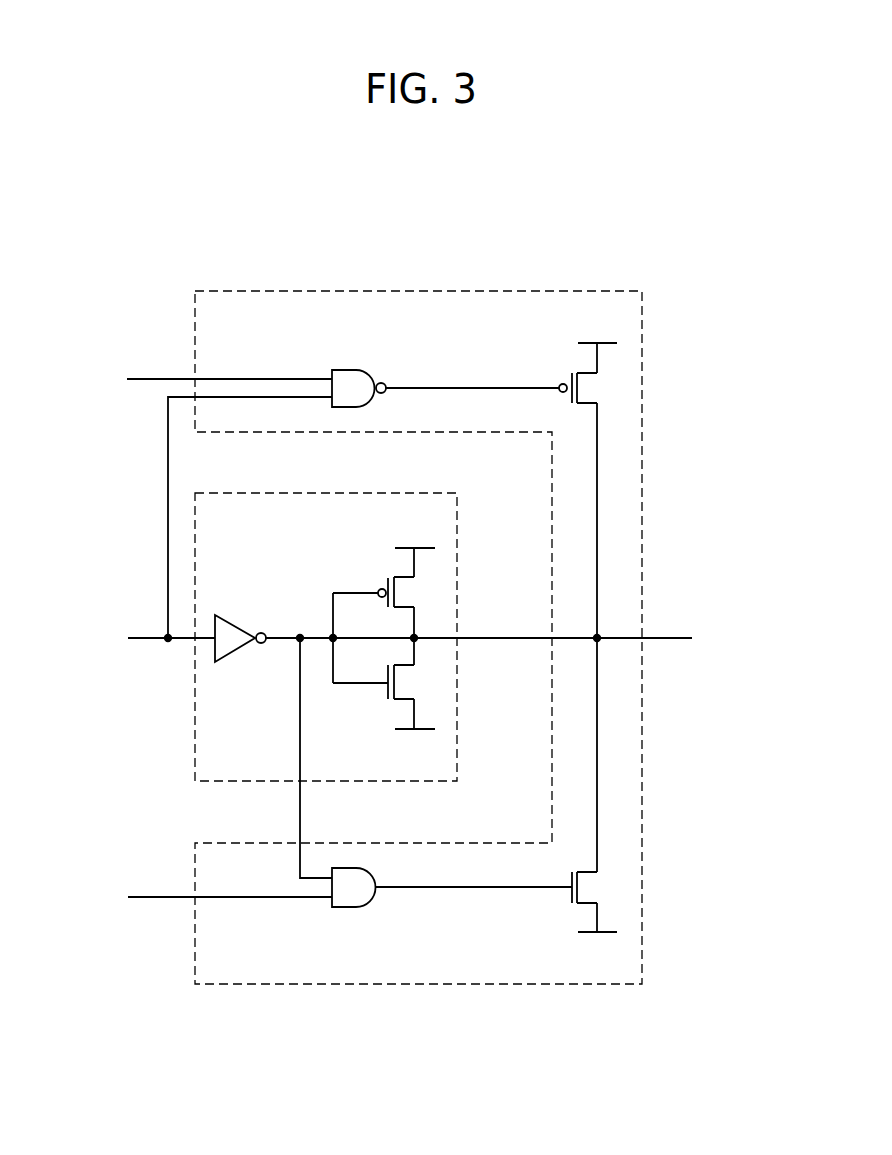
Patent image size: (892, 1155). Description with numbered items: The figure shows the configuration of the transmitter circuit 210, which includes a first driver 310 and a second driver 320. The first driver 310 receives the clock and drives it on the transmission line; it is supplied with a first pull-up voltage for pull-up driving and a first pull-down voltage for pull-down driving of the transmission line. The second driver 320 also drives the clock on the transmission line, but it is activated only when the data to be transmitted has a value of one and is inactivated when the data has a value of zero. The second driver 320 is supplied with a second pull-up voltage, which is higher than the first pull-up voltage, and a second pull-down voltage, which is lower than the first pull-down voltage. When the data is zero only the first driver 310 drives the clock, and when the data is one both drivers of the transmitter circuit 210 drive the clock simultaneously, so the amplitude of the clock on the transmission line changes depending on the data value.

The transmitter circuit 210 is at (724, 270).
The first driver 310 is at (402, 493).
The second driver 320 is at (582, 291).